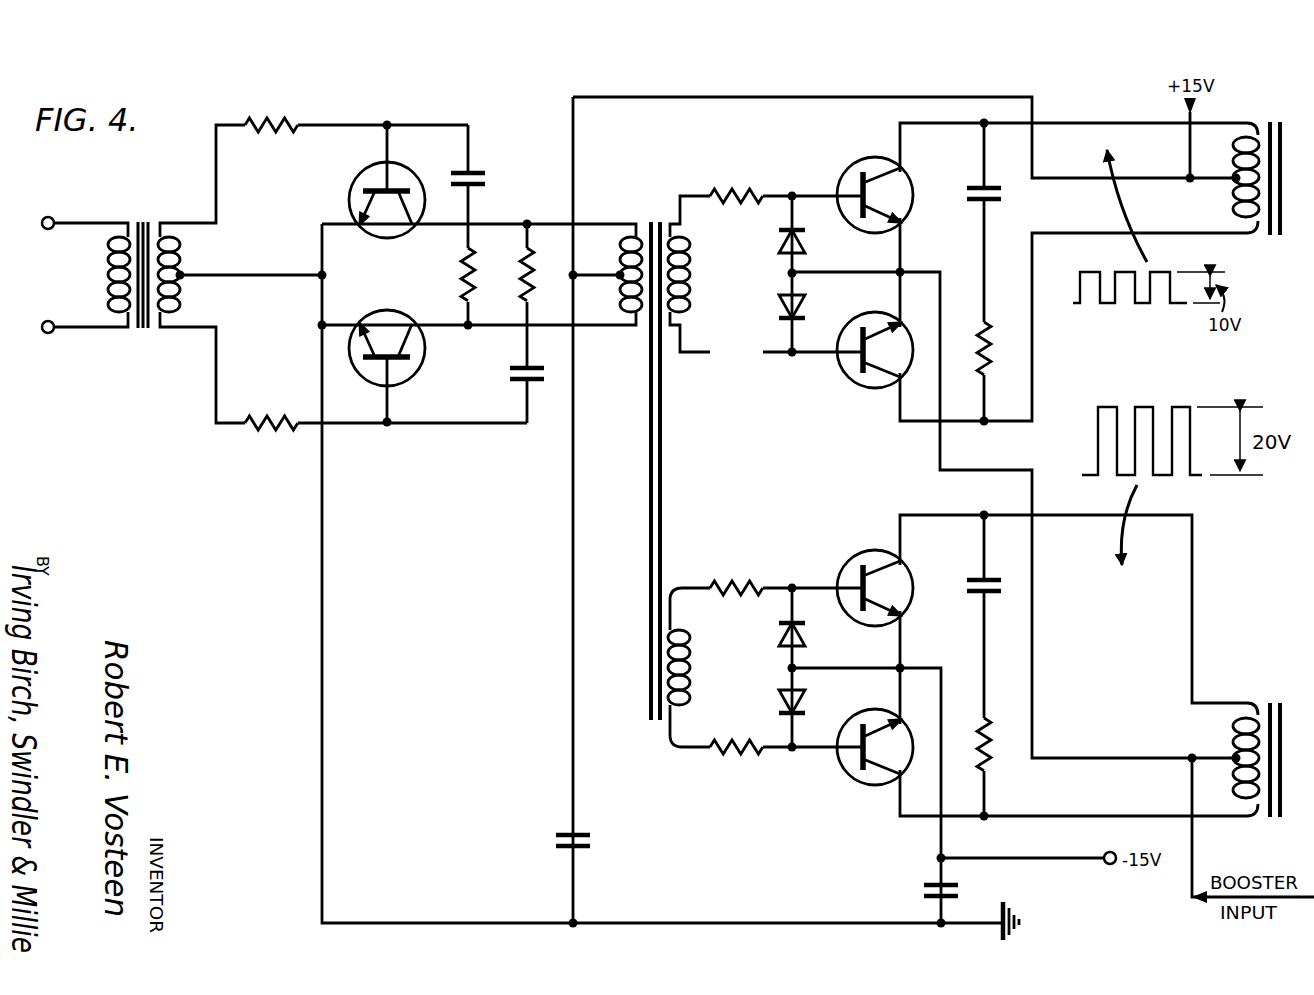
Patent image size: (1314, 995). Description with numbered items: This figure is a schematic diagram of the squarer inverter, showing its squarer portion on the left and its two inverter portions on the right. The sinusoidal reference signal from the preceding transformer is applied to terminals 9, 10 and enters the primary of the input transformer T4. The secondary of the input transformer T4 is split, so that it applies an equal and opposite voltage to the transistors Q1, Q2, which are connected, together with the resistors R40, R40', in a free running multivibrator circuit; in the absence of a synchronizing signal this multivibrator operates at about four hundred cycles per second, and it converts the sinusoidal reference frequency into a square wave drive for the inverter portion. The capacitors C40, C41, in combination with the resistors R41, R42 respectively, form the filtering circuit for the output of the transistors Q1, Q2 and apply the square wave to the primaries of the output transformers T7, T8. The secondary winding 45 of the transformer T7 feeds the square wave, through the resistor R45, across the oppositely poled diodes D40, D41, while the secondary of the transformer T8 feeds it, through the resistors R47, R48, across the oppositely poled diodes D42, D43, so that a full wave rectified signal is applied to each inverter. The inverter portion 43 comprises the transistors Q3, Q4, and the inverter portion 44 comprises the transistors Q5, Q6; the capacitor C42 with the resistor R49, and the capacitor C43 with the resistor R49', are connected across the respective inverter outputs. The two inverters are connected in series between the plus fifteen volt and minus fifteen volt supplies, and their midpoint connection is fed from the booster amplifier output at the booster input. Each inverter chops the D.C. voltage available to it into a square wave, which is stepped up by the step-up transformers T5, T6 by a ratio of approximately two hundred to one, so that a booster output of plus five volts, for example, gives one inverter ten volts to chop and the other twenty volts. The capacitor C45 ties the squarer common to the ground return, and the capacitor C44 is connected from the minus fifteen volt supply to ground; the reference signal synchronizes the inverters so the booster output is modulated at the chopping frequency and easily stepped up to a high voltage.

The terminal 9 is at (44, 218).
The terminal 10 is at (43, 332).
The input transformer T4 is at (143, 216).
The resistor R40 is at (289, 108).
The resistor R40' is at (259, 449).
The transistor Q1 is at (355, 178).
The transistor Q2 is at (413, 372).
The capacitor C40 is at (485, 170).
The capacitor C41 is at (513, 385).
The resistor R41 is at (460, 283).
The resistor R42 is at (524, 255).
The output transformer T7 is at (647, 213).
The secondary winding of transformer T-7 45 is at (689, 270).
The resistor R45 is at (742, 188).
The diode D40 is at (780, 247).
The diode D41 is at (783, 309).
The inverter 43 is at (816, 356).
The transistor Q3 is at (862, 158).
The transistor Q4 is at (865, 390).
The capacitor C42 is at (973, 201).
The resistor R49 is at (1033, 348).
The step-up transformer T5 is at (1263, 244).
The step-up transformer T6 is at (1252, 690).
The output transformer T8 is at (654, 732).
The resistor R47 is at (752, 587).
The inverter 44 is at (822, 586).
The diode D42 is at (782, 637).
The diode D43 is at (780, 698).
The resistor R48 is at (729, 753).
The transistor Q5 is at (866, 550).
The transistor Q6 is at (847, 778).
The capacitor C43 is at (973, 579).
The resistor R49' is at (1016, 757).
The capacitor C45 is at (556, 848).
The capacitor C44 is at (924, 885).